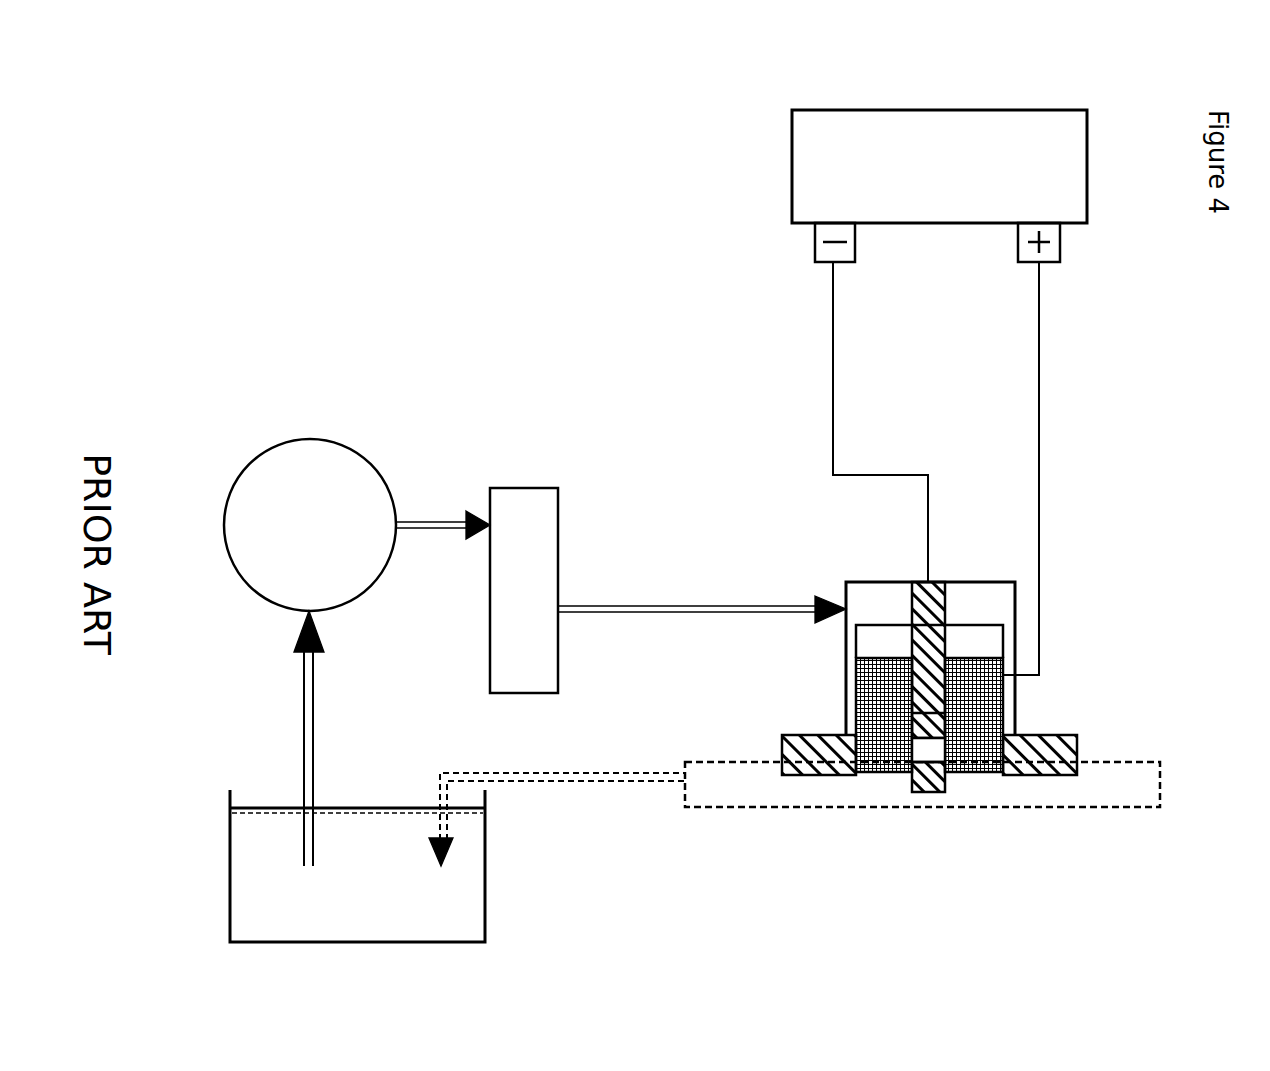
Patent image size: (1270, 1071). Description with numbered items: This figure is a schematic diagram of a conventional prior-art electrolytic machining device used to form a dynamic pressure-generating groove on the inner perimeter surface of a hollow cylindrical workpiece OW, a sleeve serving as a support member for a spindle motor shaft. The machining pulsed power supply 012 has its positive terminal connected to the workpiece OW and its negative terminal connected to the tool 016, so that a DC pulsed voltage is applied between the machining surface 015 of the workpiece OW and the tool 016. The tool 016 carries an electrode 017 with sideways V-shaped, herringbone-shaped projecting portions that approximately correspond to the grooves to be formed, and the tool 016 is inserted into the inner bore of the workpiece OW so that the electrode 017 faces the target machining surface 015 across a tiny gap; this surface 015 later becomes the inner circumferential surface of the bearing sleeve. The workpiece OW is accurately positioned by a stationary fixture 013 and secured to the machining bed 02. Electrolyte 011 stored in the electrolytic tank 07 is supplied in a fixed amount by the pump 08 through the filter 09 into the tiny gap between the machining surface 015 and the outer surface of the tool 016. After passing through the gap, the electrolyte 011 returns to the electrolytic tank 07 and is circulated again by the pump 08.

The machining pulsed power supply 012 is at (937, 110).
The pump 08 is at (314, 439).
The filter 09 is at (527, 488).
The electrolytic tank 07 is at (487, 895).
The electrolyte 011 is at (357, 845).
The machining bed 02 is at (1158, 789).
The stationary fixture 013 is at (1077, 749).
The machining surface 015 is at (1015, 693).
The tool 016 is at (936, 583).
The electrode 017 is at (903, 775).
The workpiece OW is at (976, 777).